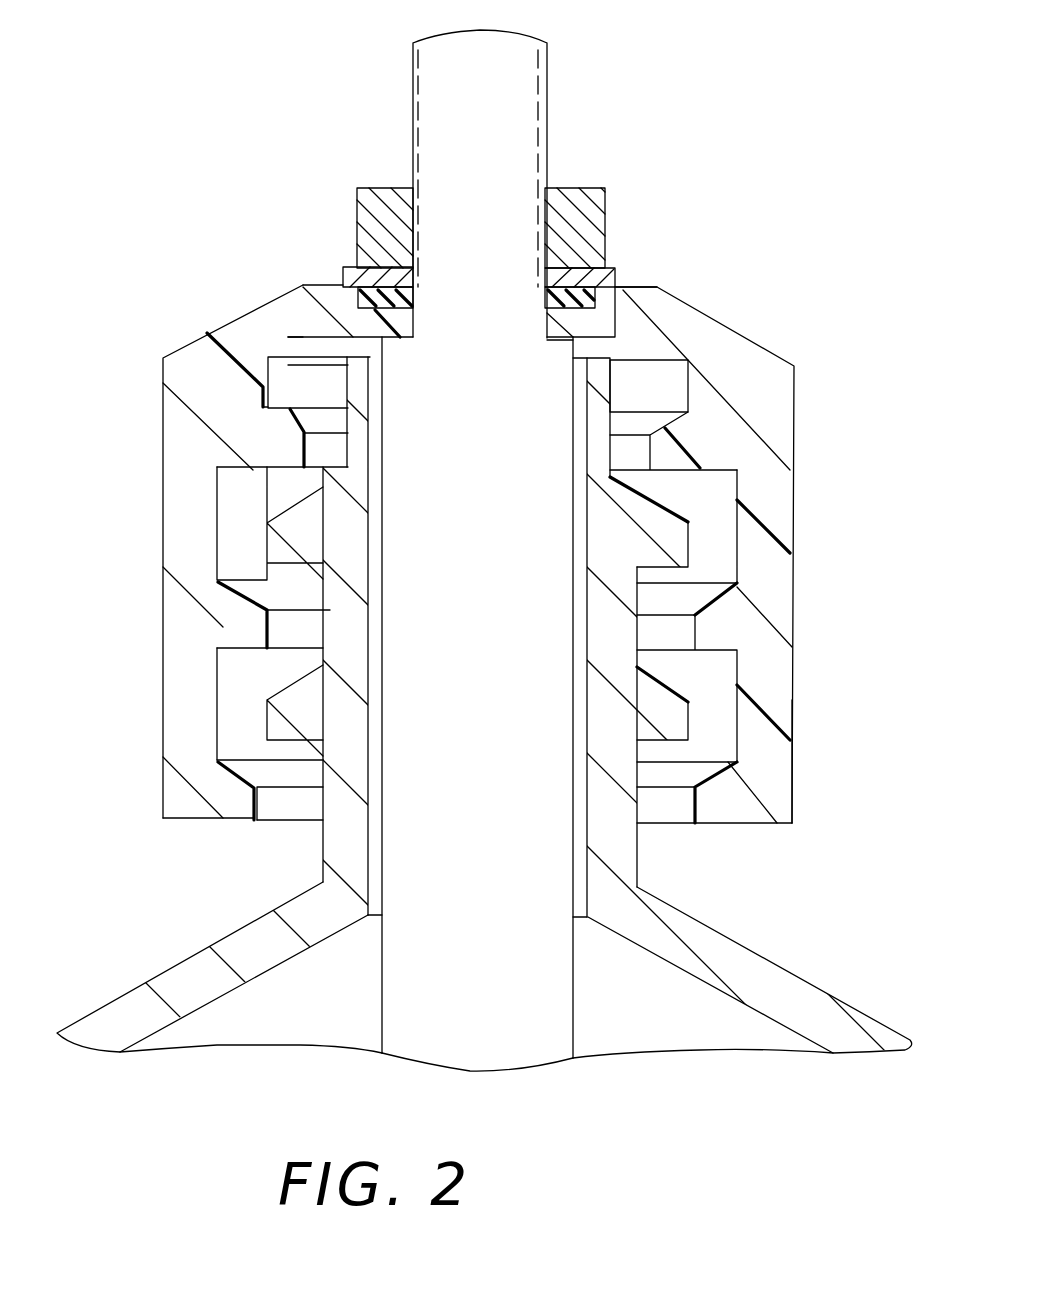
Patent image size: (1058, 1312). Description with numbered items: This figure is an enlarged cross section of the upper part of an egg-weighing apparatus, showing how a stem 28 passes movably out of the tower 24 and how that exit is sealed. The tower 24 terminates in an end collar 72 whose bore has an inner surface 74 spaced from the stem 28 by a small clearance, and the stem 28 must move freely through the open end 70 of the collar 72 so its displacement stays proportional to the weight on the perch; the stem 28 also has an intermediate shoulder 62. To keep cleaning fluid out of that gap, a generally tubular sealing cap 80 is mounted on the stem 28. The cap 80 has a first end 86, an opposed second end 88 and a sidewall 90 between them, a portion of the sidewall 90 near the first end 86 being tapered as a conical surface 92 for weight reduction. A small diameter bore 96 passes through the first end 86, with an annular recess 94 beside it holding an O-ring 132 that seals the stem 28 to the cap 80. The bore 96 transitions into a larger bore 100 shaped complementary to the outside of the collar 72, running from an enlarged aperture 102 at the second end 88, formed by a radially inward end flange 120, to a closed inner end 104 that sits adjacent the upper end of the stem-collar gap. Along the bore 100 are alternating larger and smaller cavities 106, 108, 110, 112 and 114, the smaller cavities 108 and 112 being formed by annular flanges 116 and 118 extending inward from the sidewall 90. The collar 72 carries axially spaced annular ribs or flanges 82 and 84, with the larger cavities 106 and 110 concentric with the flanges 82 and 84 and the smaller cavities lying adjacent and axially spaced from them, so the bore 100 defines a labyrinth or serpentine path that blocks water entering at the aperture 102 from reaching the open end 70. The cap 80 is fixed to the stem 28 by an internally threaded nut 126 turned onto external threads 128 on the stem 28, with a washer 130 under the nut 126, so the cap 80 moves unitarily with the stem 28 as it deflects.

The tower 24 is at (155, 985).
The stem 28 is at (432, 85).
The intermediate shoulder 62 is at (558, 342).
The open end of the end collar 70 is at (617, 337).
The end collar 72 is at (600, 618).
The inner surface of the bore 74 is at (588, 438).
The sealing cap 80 is at (722, 314).
The rib or flange 82 is at (678, 712).
The rib or flange 84 is at (676, 527).
The first end of the sealing cap 86 is at (640, 287).
The second end of the sealing cap 88 is at (742, 824).
The sidewall 90 is at (792, 775).
The conical surface 92 is at (323, 342).
The annular recess 94 is at (383, 320).
The small diameter bore 96 is at (540, 320).
The larger bore 100 is at (673, 393).
The enlarged diameter aperture 102 is at (272, 821).
The closed inner end 104 is at (290, 337).
The larger diameter cavity 106 is at (230, 687).
The smaller diameter cavity 108 is at (163, 557).
The larger diameter cavity 110 is at (217, 507).
The smaller diameter cavity 112 is at (167, 387).
The cavity 114 is at (288, 361).
The annular flange 116 is at (267, 633).
The annular flange 118 is at (305, 453).
The end flange 120 is at (257, 823).
The internally threaded nut 126 is at (378, 190).
The external threads 128 is at (540, 92).
The washer 130 is at (606, 265).
The O-ring 132 is at (358, 275).